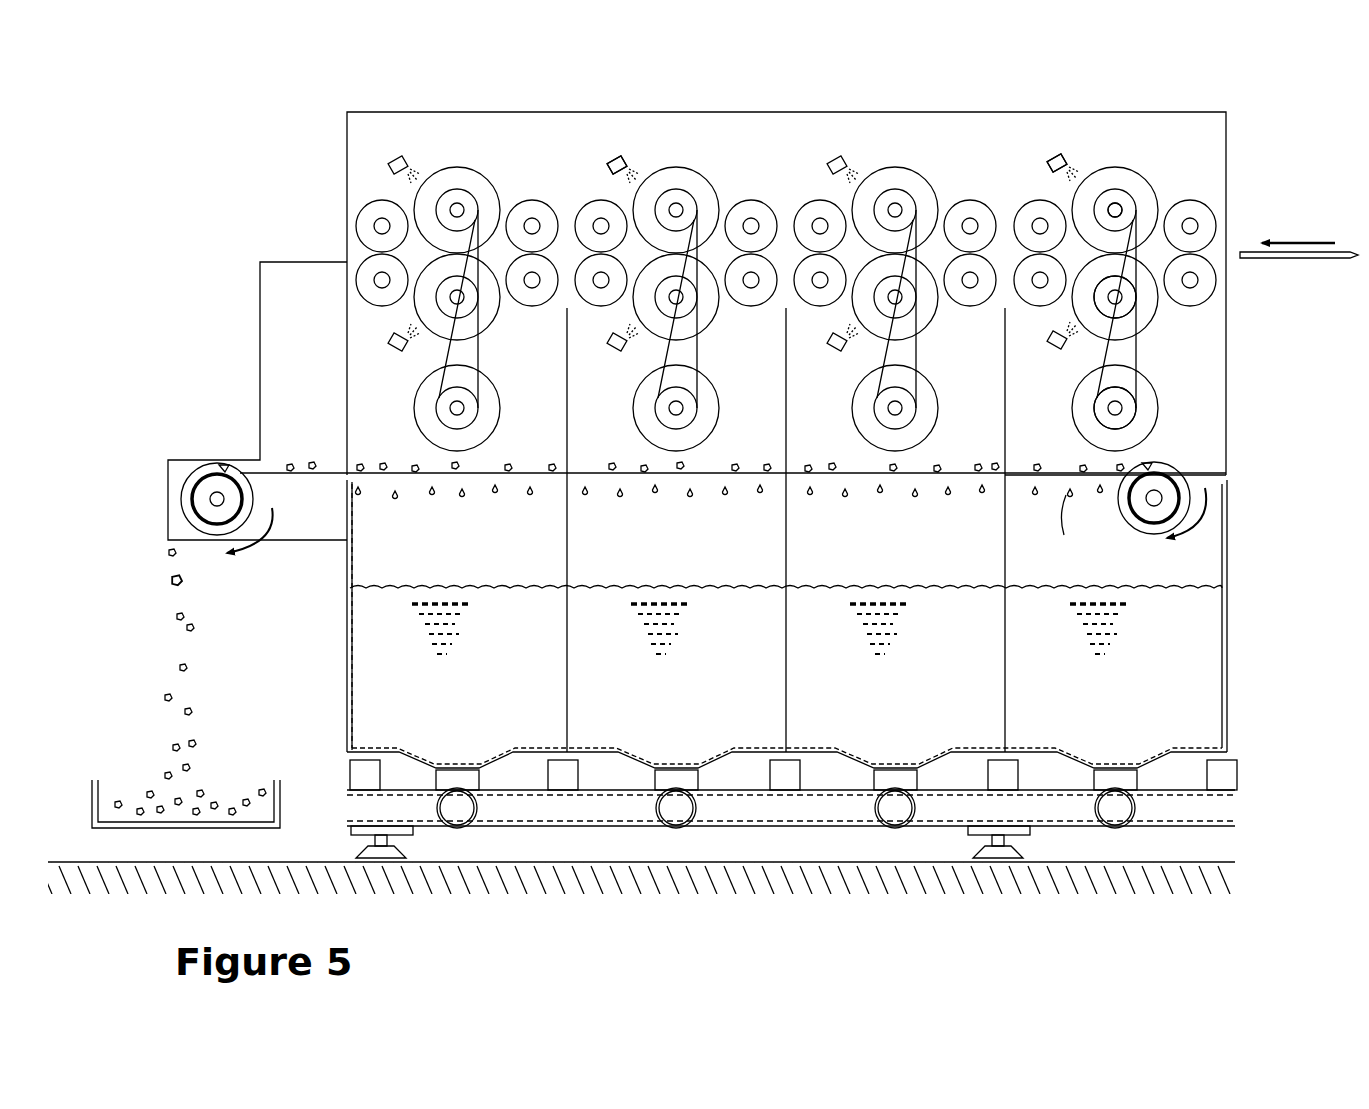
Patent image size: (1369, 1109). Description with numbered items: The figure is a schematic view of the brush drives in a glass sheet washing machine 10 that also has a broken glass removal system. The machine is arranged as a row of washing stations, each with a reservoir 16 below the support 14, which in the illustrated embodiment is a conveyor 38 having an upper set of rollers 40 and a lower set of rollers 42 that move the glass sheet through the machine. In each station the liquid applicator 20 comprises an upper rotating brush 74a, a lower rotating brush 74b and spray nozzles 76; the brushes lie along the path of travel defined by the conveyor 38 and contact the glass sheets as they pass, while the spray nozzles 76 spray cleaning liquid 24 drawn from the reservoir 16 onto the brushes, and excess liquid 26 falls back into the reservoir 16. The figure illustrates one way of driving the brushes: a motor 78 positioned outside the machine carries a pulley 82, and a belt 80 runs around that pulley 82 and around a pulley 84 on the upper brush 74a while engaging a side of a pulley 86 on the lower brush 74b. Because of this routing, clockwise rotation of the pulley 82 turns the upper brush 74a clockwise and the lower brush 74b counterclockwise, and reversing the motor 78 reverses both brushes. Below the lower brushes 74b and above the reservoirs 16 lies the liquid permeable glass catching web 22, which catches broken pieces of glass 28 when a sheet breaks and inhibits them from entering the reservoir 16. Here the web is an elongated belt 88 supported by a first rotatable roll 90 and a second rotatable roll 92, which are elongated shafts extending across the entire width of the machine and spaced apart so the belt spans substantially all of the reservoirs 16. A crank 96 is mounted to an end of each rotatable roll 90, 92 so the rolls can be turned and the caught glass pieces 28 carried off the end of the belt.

The glass sheet washing machine 10 is at (817, 106).
The support 14 is at (344, 228).
The reservoir 16 is at (445, 739).
The liquid applicator 20 is at (372, 170).
The glass catching web 22 is at (1018, 470).
The cleaning liquid 24 is at (819, 718).
The excess liquid 26 is at (392, 493).
The broken pieces of glass 28 is at (508, 470).
The conveyor 38 is at (1230, 243).
The upper set of rollers 40 is at (1190, 222).
The lower set of rollers 42 is at (1205, 293).
The upper rotating brush 74a is at (1140, 195).
The lower rotating brush 74b is at (1125, 300).
The spray nozzles 76 is at (626, 162).
The motor 78 is at (709, 394).
The belt 80 is at (698, 349).
The pulley on the motor 82 is at (1088, 413).
The pulley on the upper brush 84 is at (1118, 208).
The pulley on the lower brush 86 is at (1133, 297).
The elongated belt 88 is at (1113, 476).
The first rotatable roll 90 is at (1160, 510).
The second rotatable roll 92 is at (210, 499).
The crank 96 is at (216, 465).